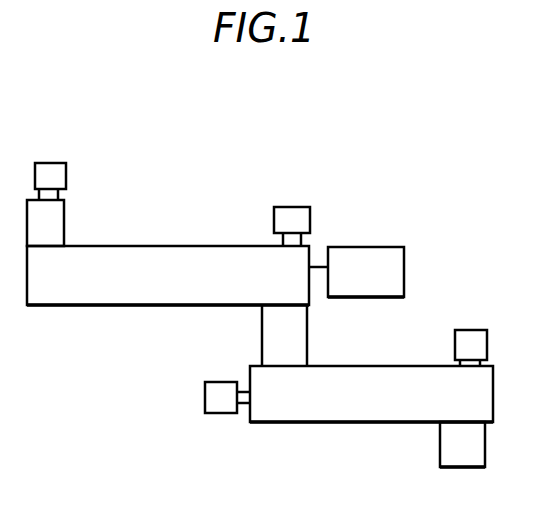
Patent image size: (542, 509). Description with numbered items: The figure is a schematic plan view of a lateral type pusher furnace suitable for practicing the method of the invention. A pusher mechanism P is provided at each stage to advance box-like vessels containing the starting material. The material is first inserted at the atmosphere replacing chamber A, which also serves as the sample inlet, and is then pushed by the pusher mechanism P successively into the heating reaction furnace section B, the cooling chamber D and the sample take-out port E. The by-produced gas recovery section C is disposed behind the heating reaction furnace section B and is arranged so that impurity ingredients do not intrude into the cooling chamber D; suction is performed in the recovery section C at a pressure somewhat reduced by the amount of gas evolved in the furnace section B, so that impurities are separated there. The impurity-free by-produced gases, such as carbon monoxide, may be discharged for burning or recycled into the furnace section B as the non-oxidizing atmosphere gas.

The atmosphere replacing chamber serving as sample inlet A is at (45, 223).
The heating reaction furnace section B is at (168, 275).
The by-produced gas recovery section C is at (356, 272).
The cooling chamber D is at (371, 363).
The sample take-out port E is at (462, 444).
The pusher mechanism P is at (47, 163).